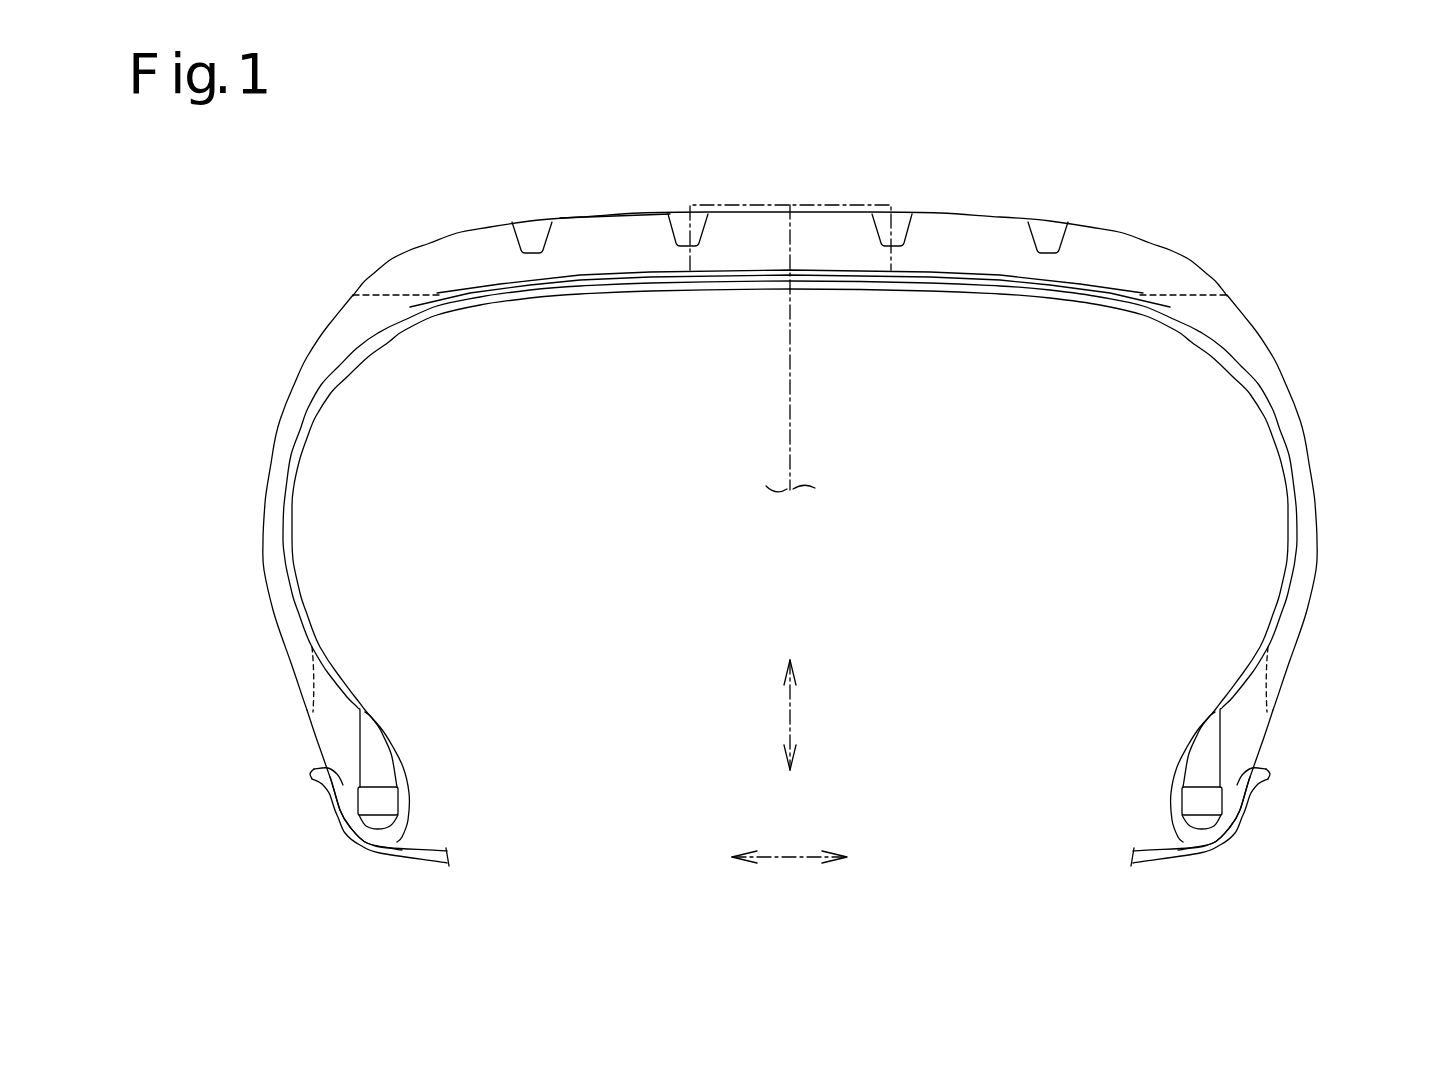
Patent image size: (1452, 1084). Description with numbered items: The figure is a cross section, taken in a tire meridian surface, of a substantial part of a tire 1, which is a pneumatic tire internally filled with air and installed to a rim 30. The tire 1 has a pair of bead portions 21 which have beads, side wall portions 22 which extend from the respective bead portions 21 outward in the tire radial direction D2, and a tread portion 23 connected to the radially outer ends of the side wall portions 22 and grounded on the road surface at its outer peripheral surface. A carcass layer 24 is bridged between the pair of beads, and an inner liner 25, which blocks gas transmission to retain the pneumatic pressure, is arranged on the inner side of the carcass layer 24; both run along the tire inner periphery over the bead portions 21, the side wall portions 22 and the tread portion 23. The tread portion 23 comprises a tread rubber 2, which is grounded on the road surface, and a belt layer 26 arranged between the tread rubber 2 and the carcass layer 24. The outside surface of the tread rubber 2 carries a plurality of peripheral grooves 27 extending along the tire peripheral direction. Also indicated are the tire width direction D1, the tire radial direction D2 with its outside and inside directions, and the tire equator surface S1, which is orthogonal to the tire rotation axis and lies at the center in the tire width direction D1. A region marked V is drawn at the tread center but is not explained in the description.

The tire 1 is at (1355, 130).
The tread rubber 2 is at (790, 194).
The bead portions 21 is at (308, 745).
The side wall portions 22 is at (268, 412).
The tread portion 23 is at (612, 200).
The carcass layer 24 is at (535, 296).
The inner liner 25 is at (940, 296).
The belt layer 26 is at (660, 287).
The peripheral grooves 27 is at (530, 222).
The rim 30 is at (380, 858).
The virtual region V is at (838, 207).
The tire equator surface S1 is at (790, 428).
The tire width direction D1 is at (789, 871).
The tire radial direction D2 is at (800, 716).